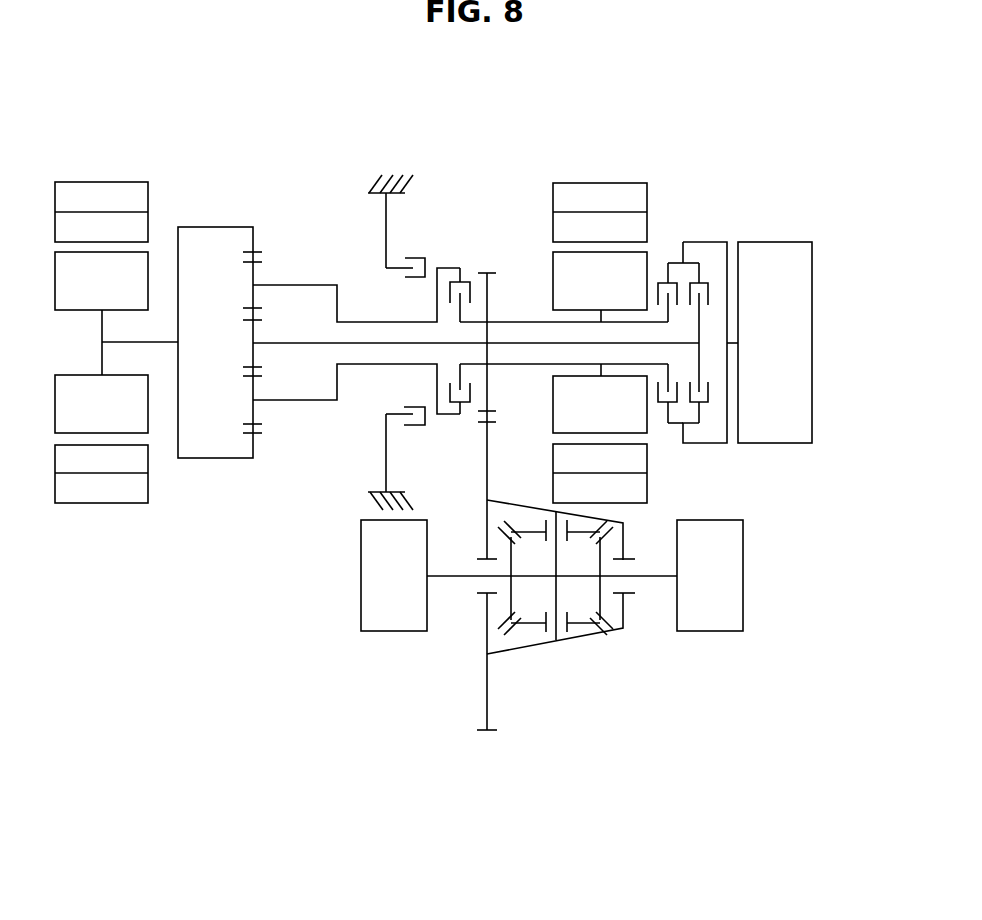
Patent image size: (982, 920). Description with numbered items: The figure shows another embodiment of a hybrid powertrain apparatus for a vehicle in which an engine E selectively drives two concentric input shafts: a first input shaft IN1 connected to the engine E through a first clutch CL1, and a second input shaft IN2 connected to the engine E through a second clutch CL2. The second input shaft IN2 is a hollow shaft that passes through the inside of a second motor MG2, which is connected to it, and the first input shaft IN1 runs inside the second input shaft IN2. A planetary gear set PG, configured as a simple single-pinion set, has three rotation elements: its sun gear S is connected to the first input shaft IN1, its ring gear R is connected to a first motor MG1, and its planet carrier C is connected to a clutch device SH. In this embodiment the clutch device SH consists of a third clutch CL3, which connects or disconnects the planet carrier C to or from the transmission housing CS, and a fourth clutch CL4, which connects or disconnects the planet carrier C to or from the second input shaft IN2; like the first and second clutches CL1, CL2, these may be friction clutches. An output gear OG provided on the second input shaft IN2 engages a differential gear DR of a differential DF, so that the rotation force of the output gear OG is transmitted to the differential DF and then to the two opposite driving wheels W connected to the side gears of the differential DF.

The first motor MG1 is at (102, 178).
The second motor MG2 is at (599, 176).
The planetary gear set PG is at (242, 464).
The ring gear R is at (260, 250).
The planet carrier C is at (302, 283).
The sun gear S is at (262, 318).
The first input shaft IN1 is at (297, 346).
The second input shaft IN2 is at (510, 320).
The transmission housing CS is at (390, 173).
The third clutch CL3 is at (415, 252).
The fourth clutch CL4 is at (463, 275).
The output gear OG is at (492, 272).
The second clutch CL2 is at (662, 283).
The first clutch CL1 is at (702, 288).
The engine E is at (812, 345).
The clutch device SH is at (401, 430).
The driving wheels W is at (393, 622).
The differential DF is at (609, 648).
The differential gear DR is at (492, 733).